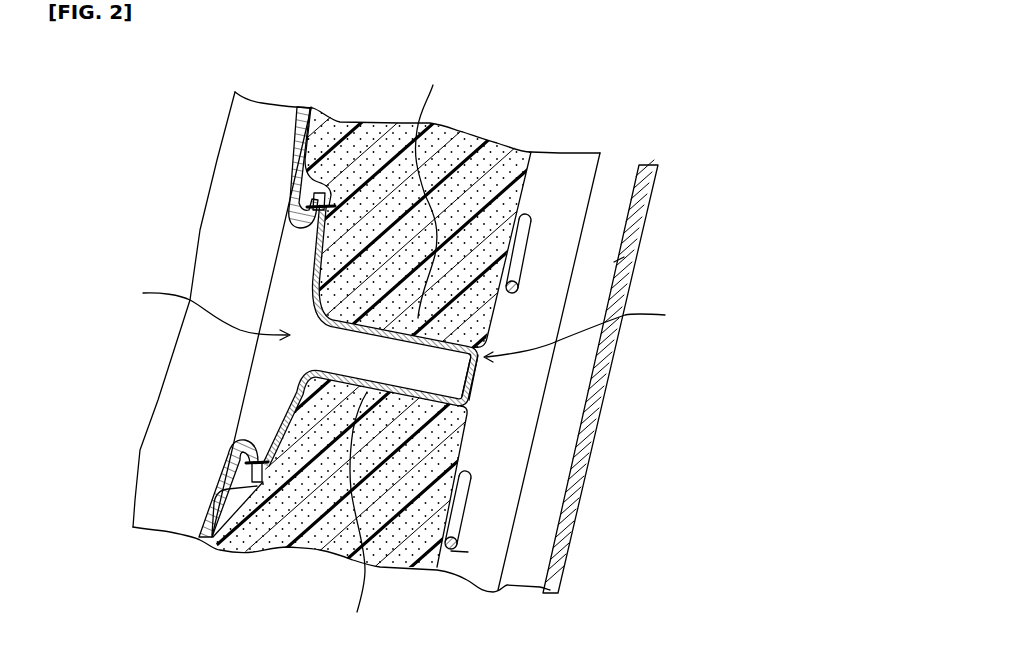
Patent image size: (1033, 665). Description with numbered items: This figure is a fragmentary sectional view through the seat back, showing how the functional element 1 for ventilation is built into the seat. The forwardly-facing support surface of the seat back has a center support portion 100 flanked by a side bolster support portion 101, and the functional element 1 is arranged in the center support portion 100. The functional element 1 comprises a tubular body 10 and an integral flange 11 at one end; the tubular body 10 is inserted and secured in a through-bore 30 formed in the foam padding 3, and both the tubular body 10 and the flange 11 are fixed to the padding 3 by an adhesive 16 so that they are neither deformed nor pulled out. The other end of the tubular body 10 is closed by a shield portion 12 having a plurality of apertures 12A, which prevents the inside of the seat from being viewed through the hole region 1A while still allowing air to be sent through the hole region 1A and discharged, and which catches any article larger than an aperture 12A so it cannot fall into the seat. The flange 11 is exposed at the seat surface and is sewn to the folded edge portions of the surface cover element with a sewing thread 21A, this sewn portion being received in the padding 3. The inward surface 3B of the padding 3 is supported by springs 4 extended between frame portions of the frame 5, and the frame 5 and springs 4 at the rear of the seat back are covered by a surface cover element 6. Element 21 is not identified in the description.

The functional element 1 is at (300, 350).
The hole region 1A is at (199, 311).
The foam padding 3 is at (494, 148).
The inward surface of the padding 3B is at (492, 317).
The springs 4 is at (520, 248).
The frame 5 is at (583, 172).
The surface cover element 6 is at (620, 260).
The tubular body 10 is at (409, 370).
The flange 11 is at (318, 262).
The shield portion 12 is at (472, 402).
The apertures 12A is at (476, 380).
The adhesive 16 is at (394, 349).
The clip strip 21 is at (333, 190).
The sewing thread 21A is at (312, 200).
The through-bore 30 is at (587, 333).
The center support portion 100 is at (200, 530).
The side bolster support portion 101 is at (182, 419).